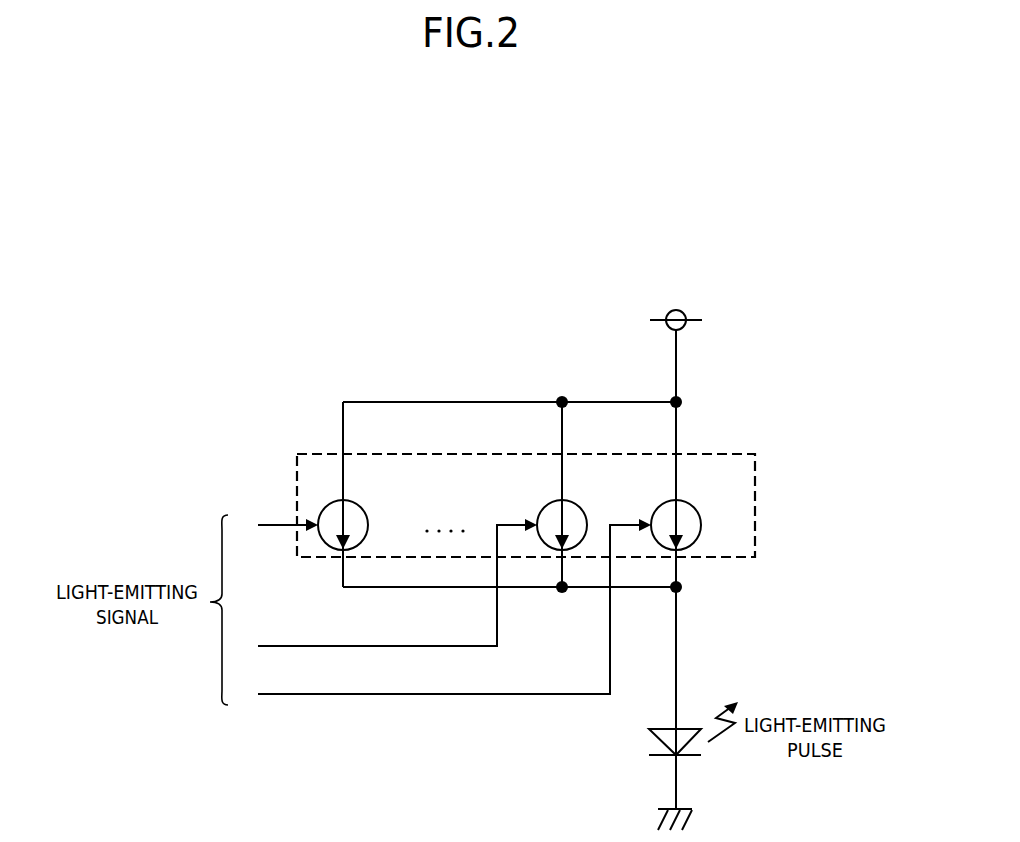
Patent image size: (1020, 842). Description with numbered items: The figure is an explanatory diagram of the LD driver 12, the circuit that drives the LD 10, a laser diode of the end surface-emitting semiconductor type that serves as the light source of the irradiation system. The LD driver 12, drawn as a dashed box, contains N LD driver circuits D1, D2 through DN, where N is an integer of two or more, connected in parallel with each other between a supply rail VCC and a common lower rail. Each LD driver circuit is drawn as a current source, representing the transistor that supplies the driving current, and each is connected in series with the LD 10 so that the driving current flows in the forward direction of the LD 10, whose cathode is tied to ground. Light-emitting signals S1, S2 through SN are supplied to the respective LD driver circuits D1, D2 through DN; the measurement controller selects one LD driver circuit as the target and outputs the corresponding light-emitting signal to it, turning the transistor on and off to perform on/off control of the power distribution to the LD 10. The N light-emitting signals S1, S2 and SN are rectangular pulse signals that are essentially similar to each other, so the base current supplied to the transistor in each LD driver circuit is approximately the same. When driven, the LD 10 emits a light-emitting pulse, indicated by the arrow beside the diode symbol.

The LD driver 12 is at (526, 471).
The LD 10 is at (649, 774).
The LD driver circuit D1 is at (695, 519).
The LD driver circuit D2 is at (585, 519).
The LD driver circuit DN is at (357, 519).
The laser diode LD is at (663, 757).
The light-emitting signal S1 is at (439, 612).
The light-emitting signal S2 is at (382, 588).
The light-emitting signal SN is at (272, 526).
The power supply VCC is at (676, 307).